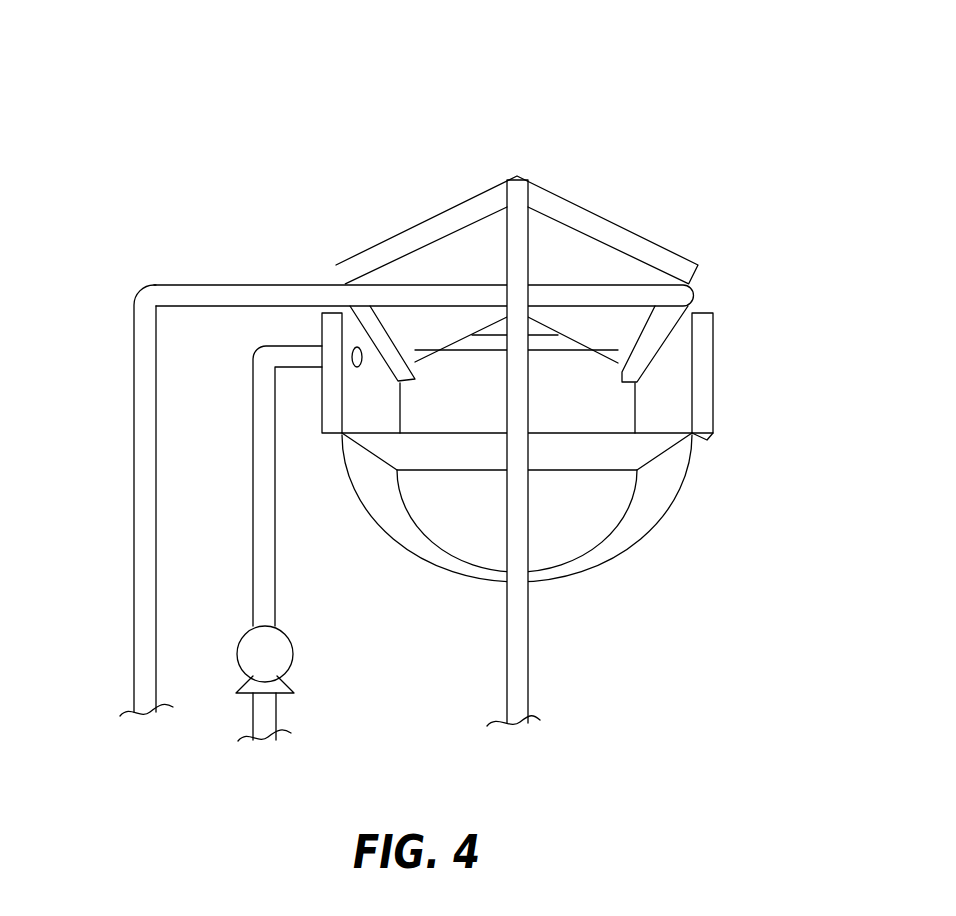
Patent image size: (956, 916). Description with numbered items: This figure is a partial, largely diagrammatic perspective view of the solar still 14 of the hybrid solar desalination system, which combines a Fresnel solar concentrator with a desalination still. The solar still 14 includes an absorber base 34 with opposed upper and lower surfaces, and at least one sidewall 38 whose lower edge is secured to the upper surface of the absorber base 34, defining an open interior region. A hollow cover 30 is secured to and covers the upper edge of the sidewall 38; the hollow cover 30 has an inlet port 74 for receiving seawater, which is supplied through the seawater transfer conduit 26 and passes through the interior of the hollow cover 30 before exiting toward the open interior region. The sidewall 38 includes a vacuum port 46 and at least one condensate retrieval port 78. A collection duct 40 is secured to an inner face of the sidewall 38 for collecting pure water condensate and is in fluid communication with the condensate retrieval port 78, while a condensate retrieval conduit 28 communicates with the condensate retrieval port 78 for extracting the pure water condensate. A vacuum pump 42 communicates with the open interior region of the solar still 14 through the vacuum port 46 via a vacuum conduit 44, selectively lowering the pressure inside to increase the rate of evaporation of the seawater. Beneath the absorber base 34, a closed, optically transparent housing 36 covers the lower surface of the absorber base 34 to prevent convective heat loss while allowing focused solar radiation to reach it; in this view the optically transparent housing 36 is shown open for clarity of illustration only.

The solar still 14 is at (176, 77).
The seawater transfer conduit 26 is at (528, 651).
The condensate retrieval conduit 28 is at (134, 542).
The hollow cover 30 is at (566, 198).
The absorber base 34 is at (578, 472).
The optically transparent housing 36 is at (622, 552).
The sidewall 38 is at (323, 433).
The collection duct 40 is at (366, 338).
The vacuum pump 42 is at (293, 657).
The vacuum conduit 44 is at (277, 590).
The vacuum port 46 is at (390, 390).
The inlet port 74 is at (517, 171).
The condensate retrieval port 78 is at (310, 262).